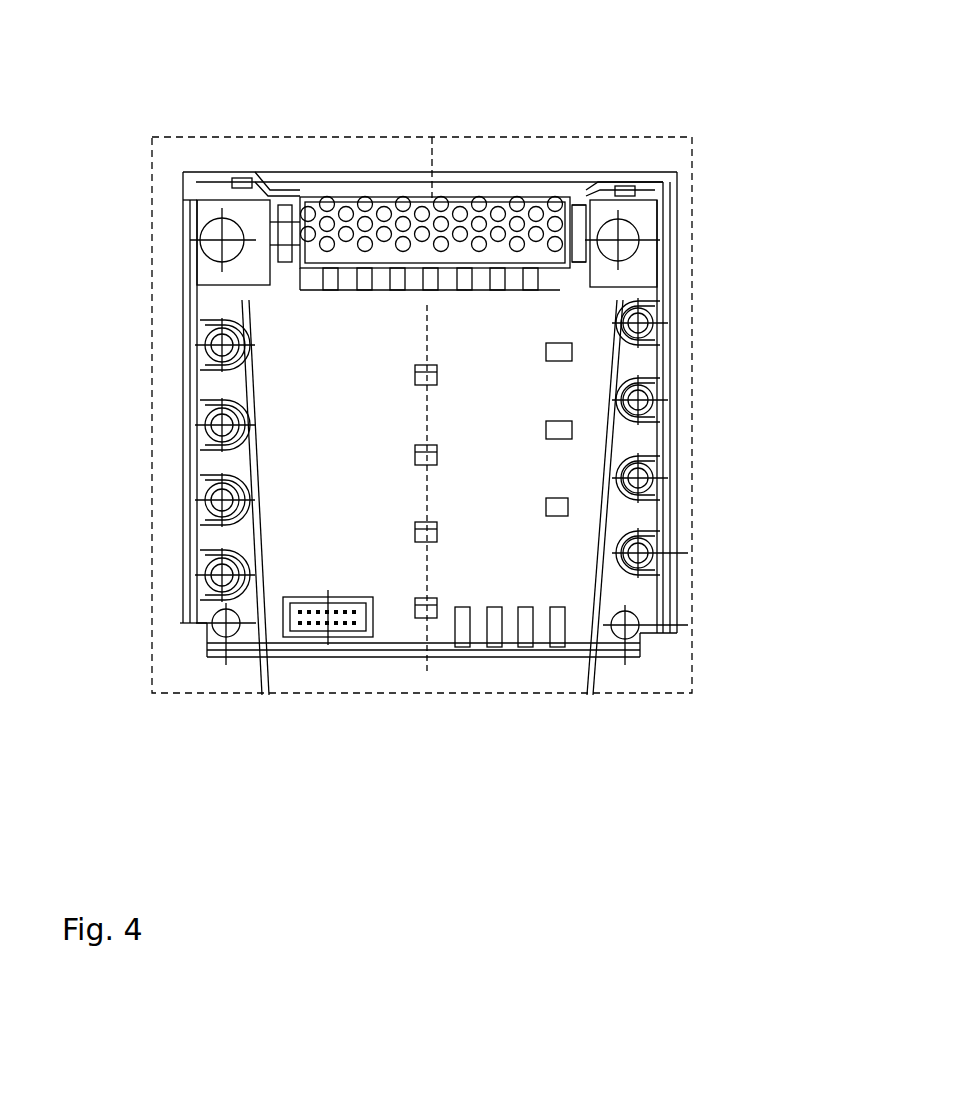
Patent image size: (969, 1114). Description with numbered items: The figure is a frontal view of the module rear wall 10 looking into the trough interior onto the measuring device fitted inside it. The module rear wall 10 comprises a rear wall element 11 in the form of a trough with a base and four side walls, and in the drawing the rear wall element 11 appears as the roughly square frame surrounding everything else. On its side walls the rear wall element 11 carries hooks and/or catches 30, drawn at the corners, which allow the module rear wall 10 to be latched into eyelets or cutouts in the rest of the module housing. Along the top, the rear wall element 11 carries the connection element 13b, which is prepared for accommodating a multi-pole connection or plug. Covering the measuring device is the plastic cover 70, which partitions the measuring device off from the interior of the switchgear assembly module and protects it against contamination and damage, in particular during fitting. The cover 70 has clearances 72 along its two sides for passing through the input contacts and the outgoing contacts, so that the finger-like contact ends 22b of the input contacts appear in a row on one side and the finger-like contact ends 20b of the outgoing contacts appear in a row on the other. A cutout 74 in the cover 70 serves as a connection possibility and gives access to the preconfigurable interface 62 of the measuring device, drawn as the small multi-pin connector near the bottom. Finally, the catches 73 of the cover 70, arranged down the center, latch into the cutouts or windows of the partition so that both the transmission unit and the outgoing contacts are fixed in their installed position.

The module rear wall 10 is at (422, 469).
The rear wall element 11 is at (664, 595).
The connection element 13b is at (355, 185).
The contact ends of the outgoing contacts 20b is at (616, 572).
The contact ends of the input contacts 22b is at (202, 372).
The hooks and/or catches 30 is at (193, 240).
The interface 62 is at (345, 648).
The cover 70 is at (380, 630).
The clearances 72 is at (268, 660).
The catches 73 is at (437, 600).
The cutout 74 is at (388, 588).